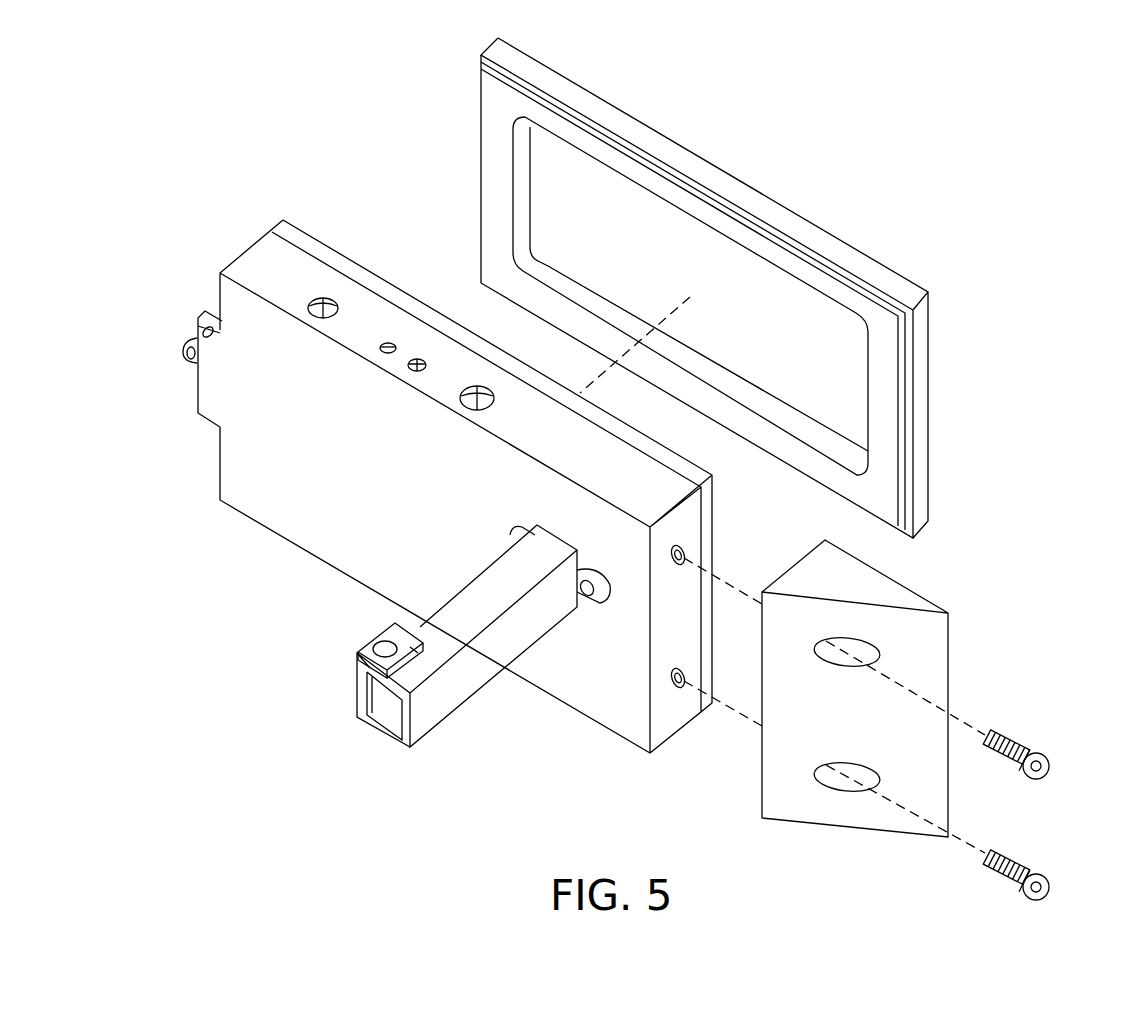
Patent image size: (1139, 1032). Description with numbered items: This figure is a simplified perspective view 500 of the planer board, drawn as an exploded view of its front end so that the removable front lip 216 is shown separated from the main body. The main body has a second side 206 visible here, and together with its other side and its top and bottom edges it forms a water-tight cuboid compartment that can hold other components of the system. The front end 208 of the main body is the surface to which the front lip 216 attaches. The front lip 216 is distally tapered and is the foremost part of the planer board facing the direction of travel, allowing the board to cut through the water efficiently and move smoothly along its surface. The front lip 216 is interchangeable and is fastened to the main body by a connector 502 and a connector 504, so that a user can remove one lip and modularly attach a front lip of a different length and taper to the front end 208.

The second side 206 is at (716, 166).
The front end 208 is at (693, 518).
The front lip 216 is at (917, 607).
The simplified perspective view 500 is at (1040, 208).
The connector 502 is at (1043, 753).
The connector 504 is at (1043, 878).